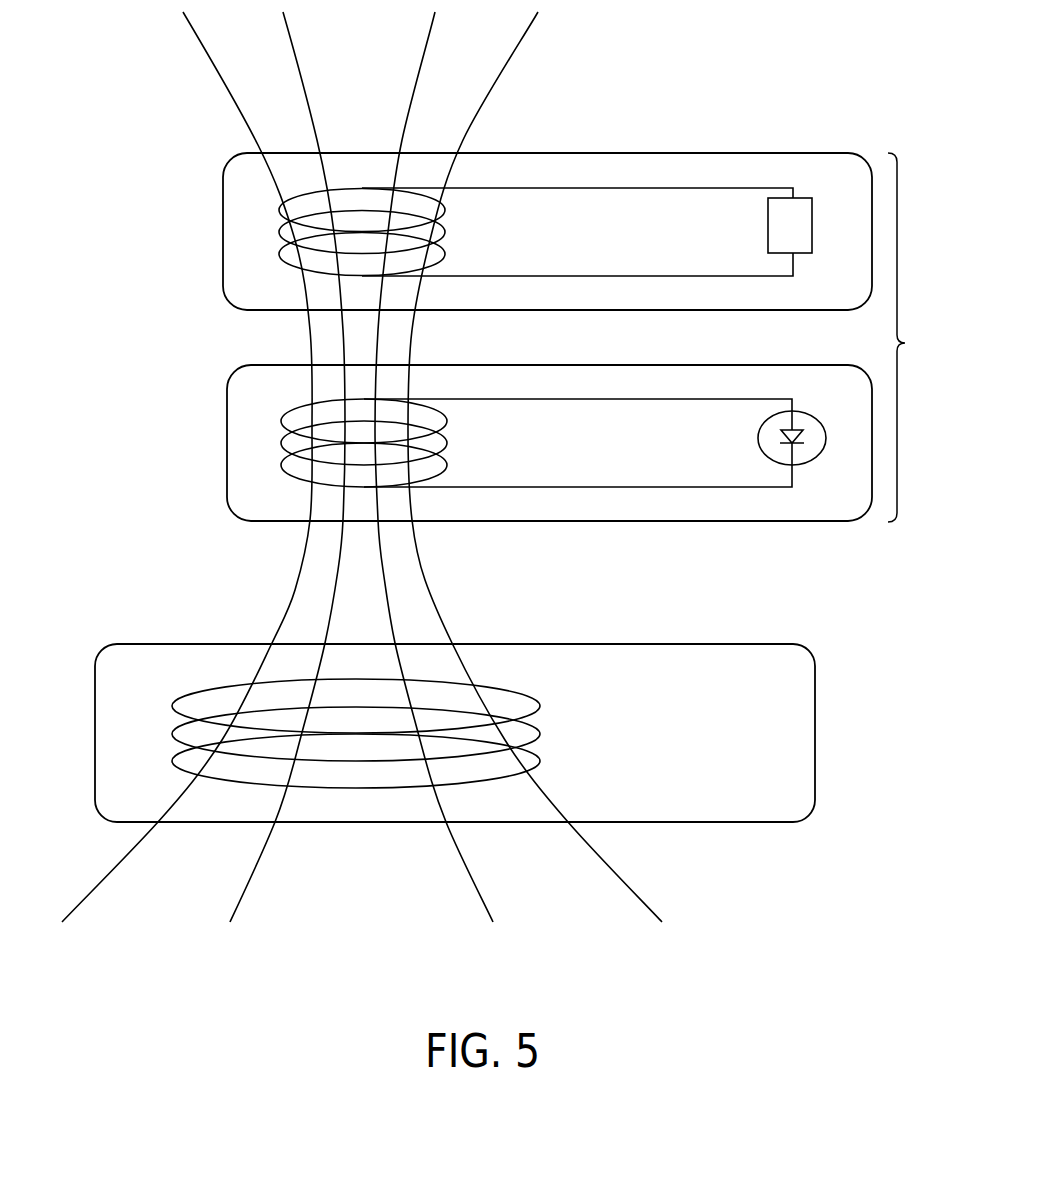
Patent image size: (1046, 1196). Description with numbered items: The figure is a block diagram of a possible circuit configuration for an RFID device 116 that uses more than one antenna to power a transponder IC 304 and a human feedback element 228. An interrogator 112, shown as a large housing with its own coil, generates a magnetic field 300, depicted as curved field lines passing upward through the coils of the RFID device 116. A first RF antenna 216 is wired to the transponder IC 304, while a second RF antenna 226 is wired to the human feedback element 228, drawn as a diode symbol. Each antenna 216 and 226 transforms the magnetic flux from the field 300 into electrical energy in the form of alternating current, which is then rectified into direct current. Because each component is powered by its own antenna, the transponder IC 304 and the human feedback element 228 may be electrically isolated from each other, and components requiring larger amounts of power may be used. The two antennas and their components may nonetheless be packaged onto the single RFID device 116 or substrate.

The magnetic field 300 is at (252, 581).
The RFID device 116 is at (587, 314).
The first RF antenna 216 is at (440, 192).
The transponder IC 304 is at (768, 226).
The second RF antenna 226 is at (442, 410).
The human feedback element 228 is at (758, 437).
The interrogator 112 is at (800, 645).